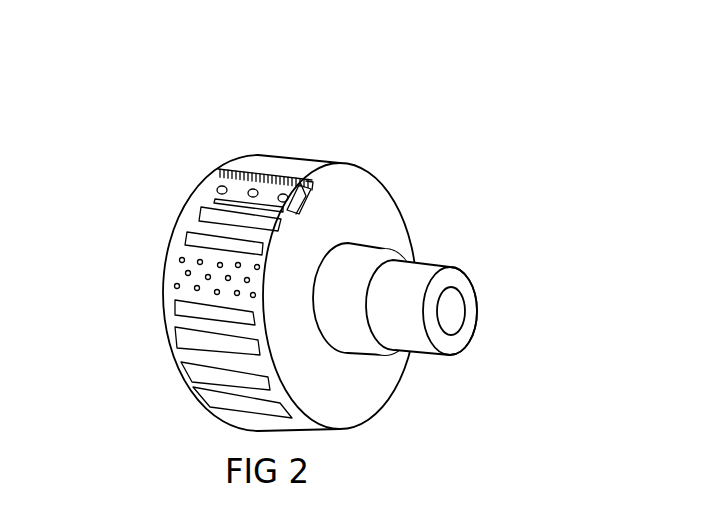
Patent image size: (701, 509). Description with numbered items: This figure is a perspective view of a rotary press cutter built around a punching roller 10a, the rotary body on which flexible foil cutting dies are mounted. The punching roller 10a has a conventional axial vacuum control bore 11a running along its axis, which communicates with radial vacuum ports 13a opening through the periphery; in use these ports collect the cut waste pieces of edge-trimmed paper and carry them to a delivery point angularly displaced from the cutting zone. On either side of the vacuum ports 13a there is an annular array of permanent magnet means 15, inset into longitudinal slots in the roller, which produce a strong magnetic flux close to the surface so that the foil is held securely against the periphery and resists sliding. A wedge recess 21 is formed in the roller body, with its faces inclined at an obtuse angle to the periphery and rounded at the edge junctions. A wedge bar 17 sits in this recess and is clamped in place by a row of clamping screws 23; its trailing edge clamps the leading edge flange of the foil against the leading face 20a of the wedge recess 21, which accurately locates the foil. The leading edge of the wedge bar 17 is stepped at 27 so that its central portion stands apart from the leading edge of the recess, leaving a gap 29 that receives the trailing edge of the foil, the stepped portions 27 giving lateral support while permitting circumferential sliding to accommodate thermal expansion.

The punching roller 10a is at (383, 210).
The axial vacuum control bore 11a is at (450, 313).
The radial vacuum ports 13a is at (198, 288).
The permanent magnet means 15 is at (208, 215).
The wedge bar 17 is at (300, 183).
The leading face of wedge recess 20a is at (310, 197).
The wedge recess 21 is at (307, 207).
The clamping screws 23 is at (252, 189).
The stepped portions of wedge bar 27 is at (283, 207).
The gap 29 is at (270, 173).